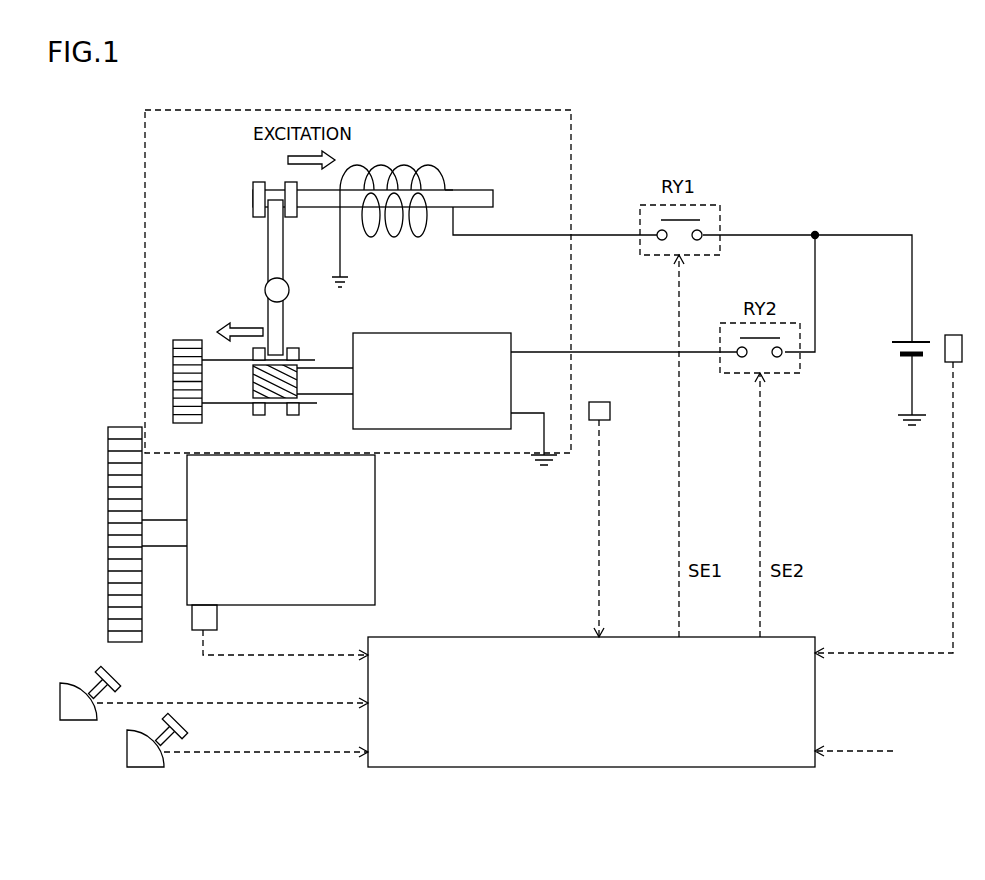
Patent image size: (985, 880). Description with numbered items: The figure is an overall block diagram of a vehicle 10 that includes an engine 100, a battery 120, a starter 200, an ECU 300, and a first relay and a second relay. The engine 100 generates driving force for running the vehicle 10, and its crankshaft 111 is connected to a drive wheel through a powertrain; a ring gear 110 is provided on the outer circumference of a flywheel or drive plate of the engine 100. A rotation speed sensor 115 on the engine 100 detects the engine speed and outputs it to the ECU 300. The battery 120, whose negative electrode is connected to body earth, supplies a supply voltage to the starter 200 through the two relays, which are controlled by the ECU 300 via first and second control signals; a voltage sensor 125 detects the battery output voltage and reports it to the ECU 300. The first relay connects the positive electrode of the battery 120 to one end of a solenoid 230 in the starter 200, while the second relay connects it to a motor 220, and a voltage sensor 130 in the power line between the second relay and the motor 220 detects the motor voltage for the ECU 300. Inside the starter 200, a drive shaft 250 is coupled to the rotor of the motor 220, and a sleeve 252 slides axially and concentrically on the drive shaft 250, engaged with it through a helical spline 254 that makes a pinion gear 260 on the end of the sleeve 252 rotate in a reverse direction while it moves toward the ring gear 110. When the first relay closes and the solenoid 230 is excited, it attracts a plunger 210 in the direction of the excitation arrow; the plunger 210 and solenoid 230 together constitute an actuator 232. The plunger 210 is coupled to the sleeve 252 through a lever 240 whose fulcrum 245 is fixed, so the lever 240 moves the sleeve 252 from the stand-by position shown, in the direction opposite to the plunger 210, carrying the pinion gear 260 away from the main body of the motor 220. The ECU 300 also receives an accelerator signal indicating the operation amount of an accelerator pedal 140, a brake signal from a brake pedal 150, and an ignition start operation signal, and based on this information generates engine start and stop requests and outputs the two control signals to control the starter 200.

The vehicle 10 is at (755, 161).
The engine 100 is at (365, 605).
The ring gear 110 is at (108, 586).
The crankshaft 111 is at (165, 546).
The rotation speed sensor 115 is at (218, 620).
The battery 120 is at (923, 340).
The voltage sensor 125 is at (960, 334).
The voltage sensor 130 is at (612, 411).
The accelerator pedal 140 is at (60, 709).
The brake pedal 150 is at (127, 757).
The starter 200 is at (508, 110).
The plunger 210 is at (477, 190).
The motor 220 is at (452, 333).
The solenoid 230 is at (407, 165).
The actuator 232 is at (420, 258).
The lever 240 is at (268, 253).
The fulcrum 245 is at (289, 296).
The drive shaft 250 is at (330, 368).
The sleeve 252 is at (246, 416).
The helical spline 254 is at (275, 386).
The pinion gear 260 is at (188, 340).
The ECU 300 is at (752, 768).